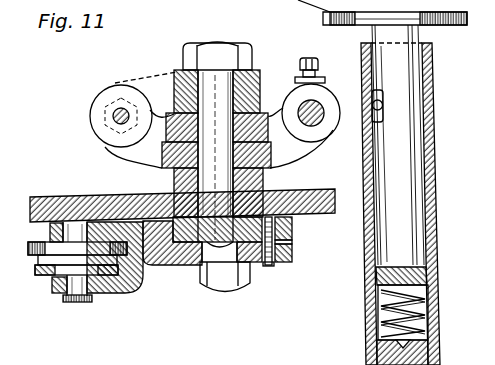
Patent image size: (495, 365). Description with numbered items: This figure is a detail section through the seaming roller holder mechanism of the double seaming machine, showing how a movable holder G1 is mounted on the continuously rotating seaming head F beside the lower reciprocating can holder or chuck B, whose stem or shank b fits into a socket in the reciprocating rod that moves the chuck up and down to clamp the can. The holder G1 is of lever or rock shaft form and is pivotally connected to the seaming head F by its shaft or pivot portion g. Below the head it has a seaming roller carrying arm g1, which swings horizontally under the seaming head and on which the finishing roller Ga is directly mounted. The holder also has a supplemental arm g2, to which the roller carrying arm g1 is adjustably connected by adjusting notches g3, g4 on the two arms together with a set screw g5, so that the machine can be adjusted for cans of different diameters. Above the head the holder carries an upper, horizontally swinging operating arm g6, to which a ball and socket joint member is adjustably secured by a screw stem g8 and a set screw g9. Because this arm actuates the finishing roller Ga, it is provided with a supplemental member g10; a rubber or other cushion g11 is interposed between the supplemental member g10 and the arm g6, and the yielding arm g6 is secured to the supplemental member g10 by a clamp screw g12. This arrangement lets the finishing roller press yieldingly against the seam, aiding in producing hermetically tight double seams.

The lower reciprocating can holder or chuck B is at (440, 252).
The stem or shank b is at (390, 154).
The seaming head F is at (45, 197).
The shaft or pivot portion g is at (216, 142).
The seaming roller carrying arm g1 is at (183, 262).
The movable holder G1 is at (128, 293).
The finishing roller Ga is at (50, 278).
The supplemental arm g2 is at (296, 226).
The adjusting notches g3 is at (295, 250).
The adjusting notches g4 is at (296, 242).
The set screw g5 is at (270, 264).
The operating arm g6 is at (138, 160).
The screw stem g8 is at (320, 98).
The set screw g9 is at (309, 58).
The supplemental member g10 is at (150, 78).
The cushion g11 is at (92, 123).
The clamp screw g12 is at (118, 115).